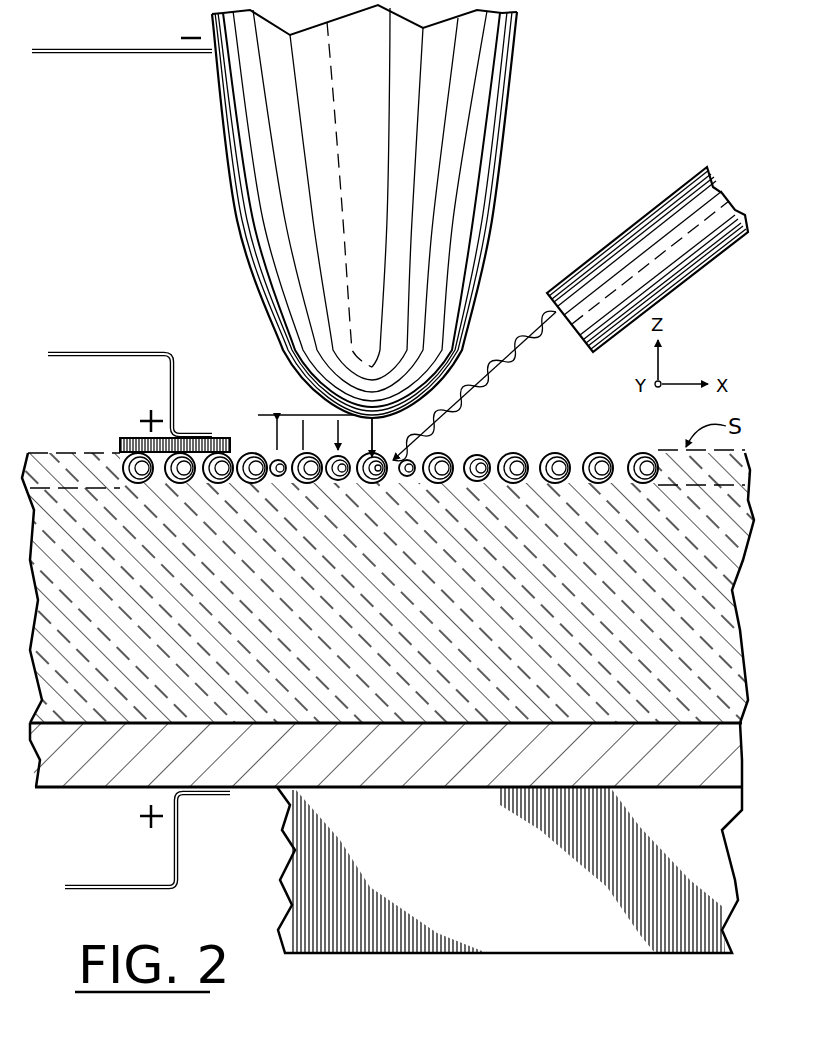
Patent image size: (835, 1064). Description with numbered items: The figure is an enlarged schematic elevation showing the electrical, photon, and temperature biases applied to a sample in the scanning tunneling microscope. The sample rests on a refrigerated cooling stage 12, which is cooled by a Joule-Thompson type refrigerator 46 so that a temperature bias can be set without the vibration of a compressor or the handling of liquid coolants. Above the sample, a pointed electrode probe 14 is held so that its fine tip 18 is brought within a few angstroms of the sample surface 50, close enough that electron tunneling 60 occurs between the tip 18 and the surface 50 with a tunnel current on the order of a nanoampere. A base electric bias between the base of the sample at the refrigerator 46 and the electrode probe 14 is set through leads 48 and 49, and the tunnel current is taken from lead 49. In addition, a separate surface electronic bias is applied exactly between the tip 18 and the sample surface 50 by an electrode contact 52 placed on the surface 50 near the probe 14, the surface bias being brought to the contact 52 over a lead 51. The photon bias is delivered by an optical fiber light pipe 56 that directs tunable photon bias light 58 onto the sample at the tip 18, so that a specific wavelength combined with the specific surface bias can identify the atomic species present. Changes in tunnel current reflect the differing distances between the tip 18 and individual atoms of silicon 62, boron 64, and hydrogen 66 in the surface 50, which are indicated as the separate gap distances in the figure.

The electrode probe 14 is at (517, 82).
The lead 49 is at (158, 61).
The surface voltage lead 51 is at (129, 359).
The electrode contact 52 is at (135, 439).
The sample surface 50 is at (76, 452).
The tip 18 is at (360, 413).
The electron tunneling 60 is at (396, 409).
The optical fiber light pipe 56 is at (613, 241).
The photon bias light 58 is at (529, 356).
The hydrogen 66 is at (280, 477).
The boron 64 is at (332, 480).
The silicon 62 is at (378, 483).
The cooling stage 12 is at (88, 790).
The lead 48 is at (139, 894).
The refrigerator 46 is at (290, 846).